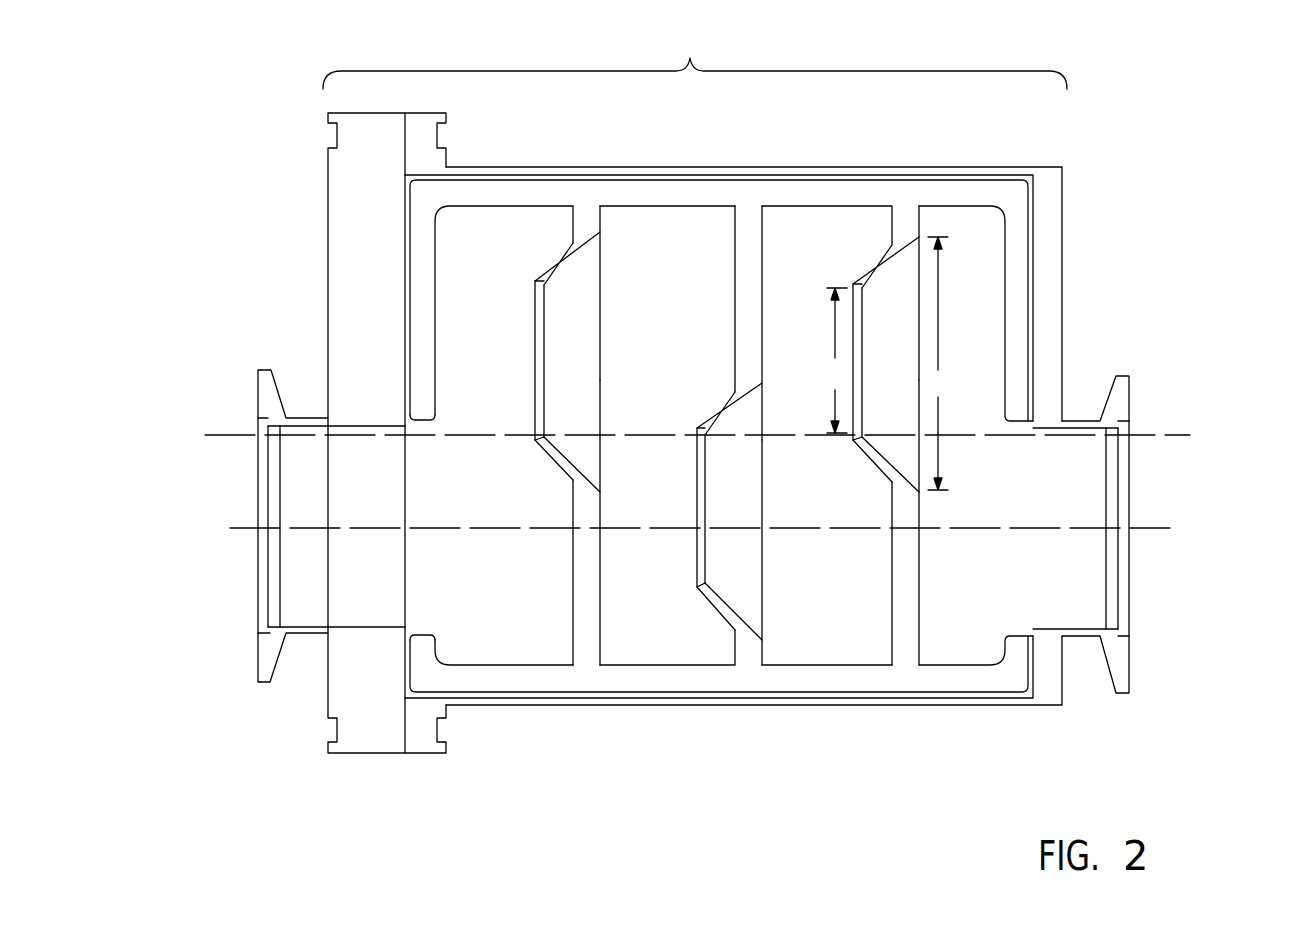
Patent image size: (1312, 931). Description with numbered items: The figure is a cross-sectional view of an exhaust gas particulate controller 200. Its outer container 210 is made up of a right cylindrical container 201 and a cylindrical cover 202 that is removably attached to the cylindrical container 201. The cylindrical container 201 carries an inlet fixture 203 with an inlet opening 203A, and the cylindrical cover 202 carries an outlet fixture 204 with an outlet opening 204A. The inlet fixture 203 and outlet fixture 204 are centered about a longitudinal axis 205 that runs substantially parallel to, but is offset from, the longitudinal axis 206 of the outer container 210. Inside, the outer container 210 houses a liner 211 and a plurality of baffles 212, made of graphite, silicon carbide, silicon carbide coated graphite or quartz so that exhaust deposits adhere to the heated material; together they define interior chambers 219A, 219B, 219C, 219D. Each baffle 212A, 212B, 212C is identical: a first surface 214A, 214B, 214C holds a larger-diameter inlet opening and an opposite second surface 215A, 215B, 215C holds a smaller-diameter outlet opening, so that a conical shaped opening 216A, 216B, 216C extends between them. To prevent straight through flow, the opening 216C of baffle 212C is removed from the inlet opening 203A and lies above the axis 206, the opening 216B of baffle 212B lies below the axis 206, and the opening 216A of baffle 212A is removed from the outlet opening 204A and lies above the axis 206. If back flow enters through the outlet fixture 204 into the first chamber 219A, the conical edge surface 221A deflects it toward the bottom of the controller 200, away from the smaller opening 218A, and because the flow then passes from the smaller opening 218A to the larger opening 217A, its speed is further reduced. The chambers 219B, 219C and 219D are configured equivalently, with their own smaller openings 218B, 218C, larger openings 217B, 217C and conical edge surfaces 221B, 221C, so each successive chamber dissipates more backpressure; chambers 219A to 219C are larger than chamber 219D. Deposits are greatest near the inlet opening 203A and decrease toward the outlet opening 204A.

The exhaust gas particulate controller 200 is at (1181, 242).
The right cylindrical container 201 is at (513, 706).
The cylindrical cover 202 is at (321, 188).
The inlet fixture 203 is at (1148, 389).
The inlet opening 203A is at (1148, 578).
The outlet fixture 204 is at (241, 390).
The outlet opening 204A is at (240, 569).
The longitudinal axis 205 is at (1159, 530).
The longitudinal axis of outer container 206 is at (1183, 437).
The outer container 210 is at (695, 55).
The liner 211 is at (972, 193).
The plurality of baffles 212 is at (589, 670).
The baffle 212A is at (586, 601).
The baffle 212B is at (752, 258).
The baffle 212C is at (908, 597).
The first surface 214A is at (604, 555).
The first surface 214B is at (793, 311).
The first surface 214C is at (921, 555).
The second surface 215A is at (535, 279).
The second surface 215B is at (688, 590).
The second surface 215C is at (855, 282).
The conical shaped opening 216A is at (559, 392).
The conical shaped opening 216B is at (725, 517).
The conical shaped opening 216C is at (900, 348).
The larger opening 217A is at (603, 296).
The larger opening 217B is at (764, 487).
The larger opening 217C is at (921, 275).
The smaller opening 218A is at (534, 355).
The smaller opening 218B is at (696, 497).
The smaller opening 218C is at (852, 345).
The first chamber 219A is at (481, 577).
The chamber 219B is at (628, 373).
The chamber 219C is at (794, 605).
The chamber 219D is at (982, 333).
The conical edge surface 221A is at (550, 457).
The conical edge surface 221B is at (712, 417).
The conical edge surface 221C is at (866, 460).